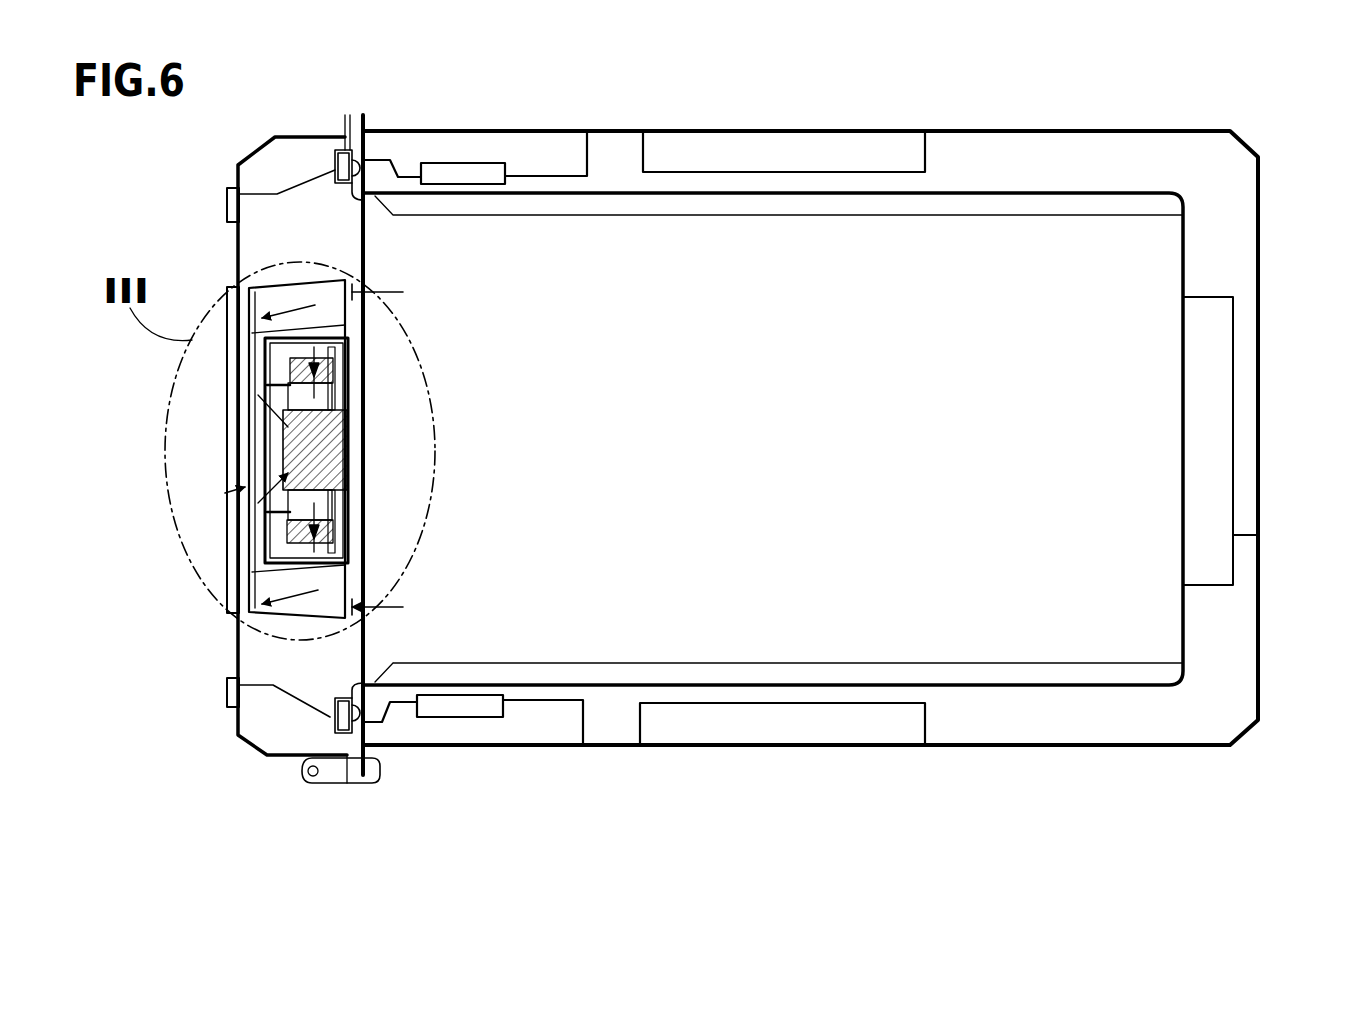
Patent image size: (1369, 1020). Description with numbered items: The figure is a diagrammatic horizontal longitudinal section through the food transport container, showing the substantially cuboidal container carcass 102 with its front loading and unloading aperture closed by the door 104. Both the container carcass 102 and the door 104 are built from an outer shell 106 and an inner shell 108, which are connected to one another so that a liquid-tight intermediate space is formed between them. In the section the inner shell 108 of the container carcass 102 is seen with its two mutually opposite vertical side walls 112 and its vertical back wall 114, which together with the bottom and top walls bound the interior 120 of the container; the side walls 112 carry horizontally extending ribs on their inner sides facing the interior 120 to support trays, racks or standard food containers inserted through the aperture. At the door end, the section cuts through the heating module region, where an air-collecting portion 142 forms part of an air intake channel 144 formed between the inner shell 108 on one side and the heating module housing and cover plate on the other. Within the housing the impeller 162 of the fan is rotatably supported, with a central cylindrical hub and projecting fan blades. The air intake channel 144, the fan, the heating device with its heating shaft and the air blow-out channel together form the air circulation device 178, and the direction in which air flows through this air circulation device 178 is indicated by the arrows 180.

The container carcass 102 is at (607, 155).
The door 104 is at (267, 722).
The outer shell 106 is at (1148, 131).
The inner shell 108 is at (1015, 235).
The side walls 112 is at (745, 235).
The back wall 114 is at (1180, 287).
The interior 120 is at (773, 439).
The air-collecting portion 142 is at (323, 315).
The air intake channel 144 is at (260, 540).
The impeller 162 is at (327, 450).
The air circulation device 178 is at (225, 493).
The arrows 180 is at (403, 292).